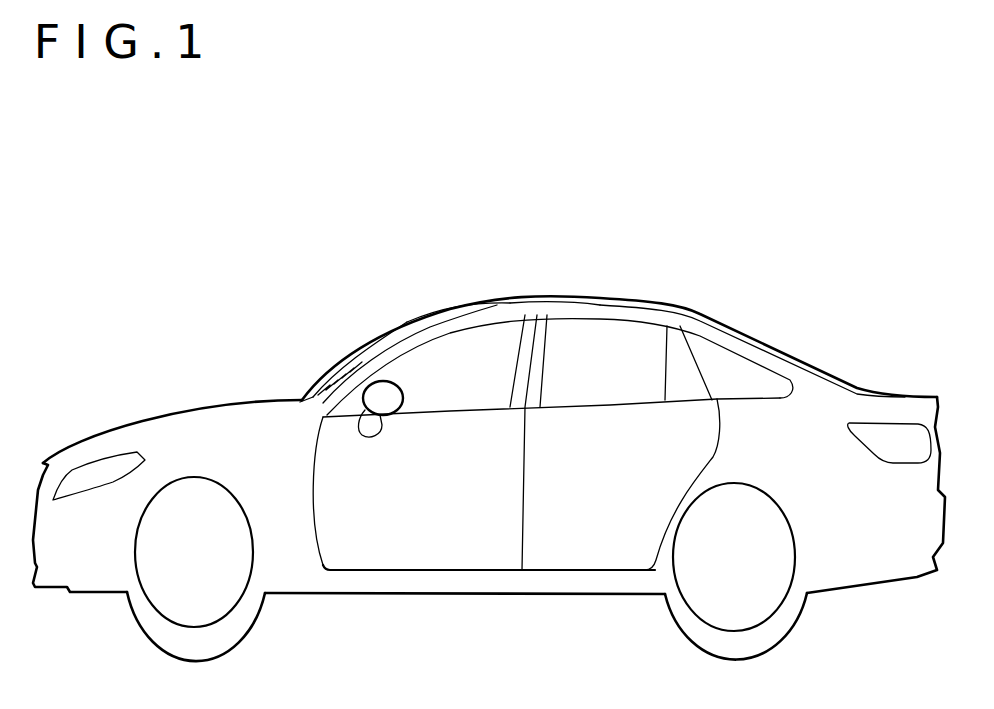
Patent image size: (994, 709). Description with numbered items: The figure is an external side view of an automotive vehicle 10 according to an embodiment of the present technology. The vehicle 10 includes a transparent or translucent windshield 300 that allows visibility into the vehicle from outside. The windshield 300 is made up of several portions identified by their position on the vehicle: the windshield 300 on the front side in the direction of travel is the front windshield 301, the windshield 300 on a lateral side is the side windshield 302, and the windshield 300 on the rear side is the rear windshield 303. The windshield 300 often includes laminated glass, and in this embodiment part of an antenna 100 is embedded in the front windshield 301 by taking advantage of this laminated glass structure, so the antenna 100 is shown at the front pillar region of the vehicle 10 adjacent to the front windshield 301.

The vehicle 10 is at (841, 161).
The antenna 100 is at (323, 382).
The windshield 300 is at (727, 173).
The front windshield 301 is at (397, 328).
The side windshield 302 is at (487, 327).
The rear windshield 303 is at (754, 329).